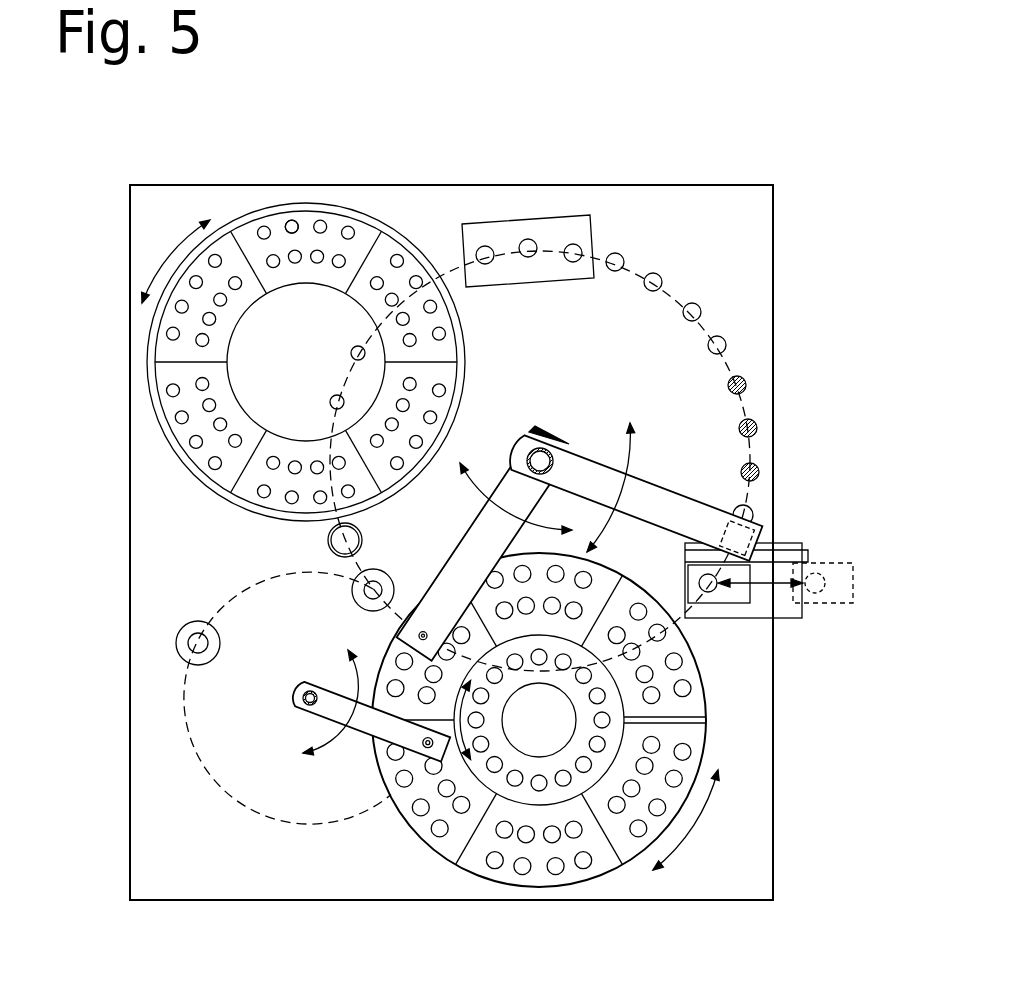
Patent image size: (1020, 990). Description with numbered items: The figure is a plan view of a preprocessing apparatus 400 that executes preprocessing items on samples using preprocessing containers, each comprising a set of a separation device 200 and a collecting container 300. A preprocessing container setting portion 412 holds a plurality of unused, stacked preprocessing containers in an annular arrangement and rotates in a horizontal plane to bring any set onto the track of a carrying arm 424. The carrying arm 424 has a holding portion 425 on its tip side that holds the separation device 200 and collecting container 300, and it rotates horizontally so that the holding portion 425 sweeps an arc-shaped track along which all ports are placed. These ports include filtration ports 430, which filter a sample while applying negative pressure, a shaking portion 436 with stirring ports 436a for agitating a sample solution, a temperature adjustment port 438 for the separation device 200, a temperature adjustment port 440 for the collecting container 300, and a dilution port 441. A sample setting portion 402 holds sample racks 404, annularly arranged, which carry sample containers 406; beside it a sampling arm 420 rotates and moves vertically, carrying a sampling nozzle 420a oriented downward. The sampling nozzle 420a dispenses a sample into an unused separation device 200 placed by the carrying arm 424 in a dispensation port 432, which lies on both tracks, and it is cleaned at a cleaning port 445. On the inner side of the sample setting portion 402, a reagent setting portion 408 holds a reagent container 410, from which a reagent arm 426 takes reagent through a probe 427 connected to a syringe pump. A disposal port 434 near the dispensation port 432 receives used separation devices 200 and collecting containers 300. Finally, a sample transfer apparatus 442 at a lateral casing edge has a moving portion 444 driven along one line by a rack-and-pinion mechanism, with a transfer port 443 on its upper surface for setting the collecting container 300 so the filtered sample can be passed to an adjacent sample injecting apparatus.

The preprocessing apparatus 400 is at (158, 124).
The preprocessing container setting portion 412 is at (248, 213).
The separation device 200 is at (290, 222).
The collecting container 300 is at (291, 226).
The filtration port 430 is at (352, 351).
The shaking portion 436 is at (494, 223).
The stirring ports 436a is at (530, 240).
The temperature adjustment port 438 is at (622, 253).
The temperature adjustment port 440 is at (744, 380).
The dilution port 441 is at (752, 509).
The sample transfer apparatus 442 is at (778, 592).
The transfer port 443 is at (712, 592).
The moving portion 444 is at (748, 600).
The holding portion 425 is at (758, 532).
The carrying arm 424 is at (598, 490).
The reagent arm 426 is at (483, 526).
The probe 427 is at (418, 633).
The dispensation port 432 is at (352, 588).
The disposal port 434 is at (328, 537).
The cleaning port 445 is at (176, 645).
The sampling arm 420 is at (363, 717).
The sampling nozzle 420a is at (428, 748).
The sample setting portion 402 is at (609, 755).
The sample racks 404 is at (447, 852).
The sample containers 406 is at (556, 875).
The reagent setting portion 408 is at (627, 716).
The reagent container 410 is at (604, 722).